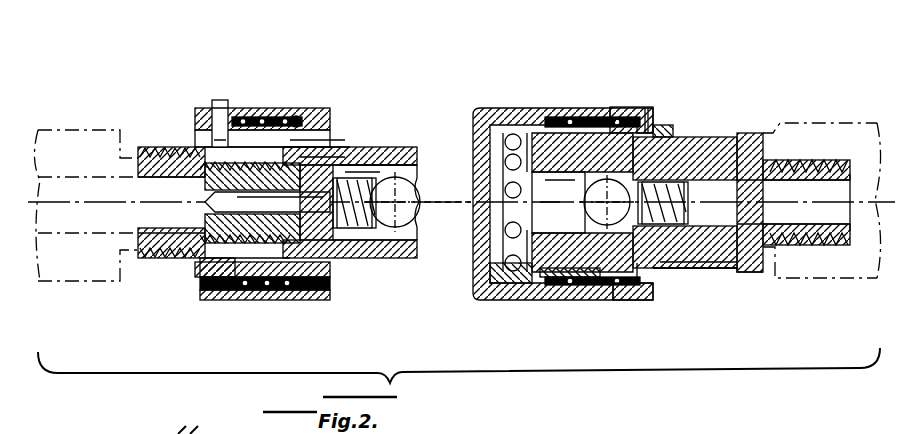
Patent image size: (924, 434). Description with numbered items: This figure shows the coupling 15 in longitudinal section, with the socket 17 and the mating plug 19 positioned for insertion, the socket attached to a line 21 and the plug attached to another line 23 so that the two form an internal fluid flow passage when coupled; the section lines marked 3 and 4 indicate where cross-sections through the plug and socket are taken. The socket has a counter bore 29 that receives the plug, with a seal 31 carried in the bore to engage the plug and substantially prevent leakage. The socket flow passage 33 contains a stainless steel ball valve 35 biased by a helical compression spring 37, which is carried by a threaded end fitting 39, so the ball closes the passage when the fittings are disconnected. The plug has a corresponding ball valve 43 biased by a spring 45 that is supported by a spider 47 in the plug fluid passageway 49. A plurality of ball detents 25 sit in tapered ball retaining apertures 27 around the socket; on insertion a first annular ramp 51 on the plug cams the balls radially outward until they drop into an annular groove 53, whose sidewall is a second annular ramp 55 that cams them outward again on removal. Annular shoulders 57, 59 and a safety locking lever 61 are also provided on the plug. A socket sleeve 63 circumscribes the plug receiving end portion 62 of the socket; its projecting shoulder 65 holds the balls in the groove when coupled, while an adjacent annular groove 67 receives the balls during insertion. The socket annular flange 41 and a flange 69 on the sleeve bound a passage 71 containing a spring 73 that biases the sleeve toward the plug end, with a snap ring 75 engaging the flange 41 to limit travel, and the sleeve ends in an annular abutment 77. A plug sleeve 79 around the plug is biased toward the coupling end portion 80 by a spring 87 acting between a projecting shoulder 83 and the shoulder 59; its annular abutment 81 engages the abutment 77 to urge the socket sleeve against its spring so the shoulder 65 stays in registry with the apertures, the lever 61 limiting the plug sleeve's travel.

The coupling 15 is at (415, 74).
The socket 17 is at (715, 272).
The plug 19 is at (172, 268).
The line 21 is at (866, 178).
The line 23 is at (60, 180).
The ball detents 25 is at (480, 220).
The ball retaining apertures 27 is at (482, 202).
The counter bore 29 is at (562, 282).
The seal 31 is at (557, 132).
The flow passage 33 is at (793, 202).
The ball valve 35 is at (582, 206).
The helical compression spring 37 is at (675, 158).
The threaded end fitting 39 is at (727, 160).
The annular flange 41 is at (612, 298).
The ball valve 43 is at (418, 180).
The helical compression spring 45 is at (386, 250).
The spider 47 is at (203, 180).
The plug fluid passageway 49 is at (208, 207).
The first annular ramp 51 is at (377, 164).
The annular groove 53 is at (330, 258).
The second annular ramp 55 is at (333, 156).
The annular shoulder 57 is at (330, 146).
The annular shoulder 59 is at (197, 133).
The safety locking lever 61 is at (226, 100).
The plug receiving end portion 62 is at (660, 268).
The socket sleeve 63 is at (558, 288).
The projecting shoulder 65 is at (482, 262).
The annular groove 67 is at (505, 107).
The flange 69 is at (646, 106).
The passage 71 is at (578, 116).
The helical compression spring 73 is at (612, 108).
The snap ring 75 is at (660, 132).
The annular abutment 77 is at (483, 130).
The plug sleeve 79 is at (207, 303).
The coupling end portion 80 is at (300, 302).
The annular abutment 81 is at (330, 262).
The projecting shoulder 83 is at (300, 116).
The helical compression spring 87 is at (266, 116).
The section line 3- 3 is at (268, 78).
The section line 4- 4 is at (558, 78).